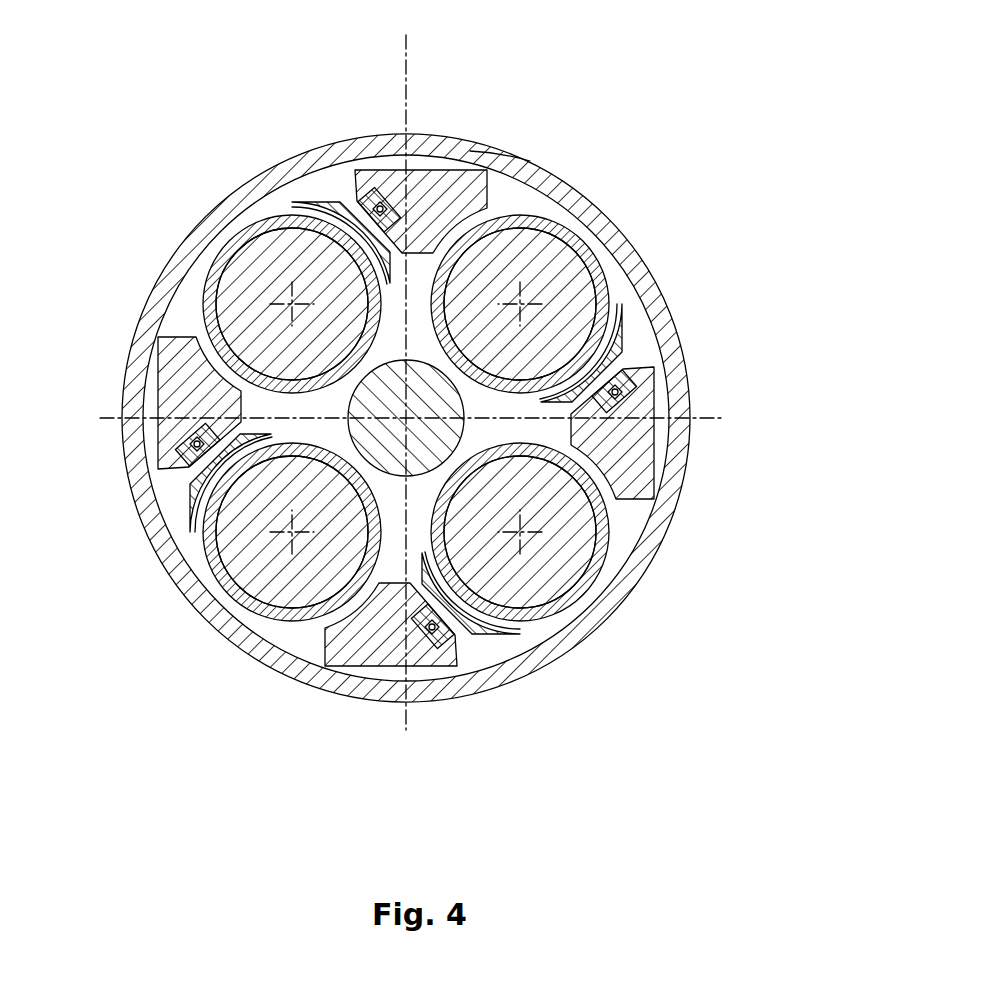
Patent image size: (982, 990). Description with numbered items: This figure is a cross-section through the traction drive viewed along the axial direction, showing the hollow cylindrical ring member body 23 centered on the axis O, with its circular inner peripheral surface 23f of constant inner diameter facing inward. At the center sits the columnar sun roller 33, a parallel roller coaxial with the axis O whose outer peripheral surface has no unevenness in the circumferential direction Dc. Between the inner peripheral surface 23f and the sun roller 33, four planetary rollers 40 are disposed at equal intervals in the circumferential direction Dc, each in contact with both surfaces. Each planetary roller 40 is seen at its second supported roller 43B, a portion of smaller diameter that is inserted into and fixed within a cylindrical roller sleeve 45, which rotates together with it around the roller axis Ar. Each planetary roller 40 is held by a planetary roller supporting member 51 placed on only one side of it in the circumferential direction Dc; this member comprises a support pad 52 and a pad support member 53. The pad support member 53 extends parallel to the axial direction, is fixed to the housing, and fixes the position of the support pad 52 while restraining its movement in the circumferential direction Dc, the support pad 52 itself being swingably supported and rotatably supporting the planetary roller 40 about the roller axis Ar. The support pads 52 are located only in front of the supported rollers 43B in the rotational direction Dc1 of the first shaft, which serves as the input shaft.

The ring member body 23 is at (455, 135).
The inner peripheral surface 23f is at (491, 166).
The sun roller 33 is at (657, 470).
The planetary roller 40 is at (198, 301).
The second supported roller 43B is at (273, 250).
The roller sleeve 45 is at (226, 240).
The planetary roller supporting member 51 is at (385, 200).
The support pad 52 is at (310, 200).
The pad support member 53 is at (360, 175).
The roller axis Ar is at (307, 210).
The circumferential direction Dc is at (472, 784).
The rotational direction Dc1 is at (357, 82).
The axis O is at (655, 392).